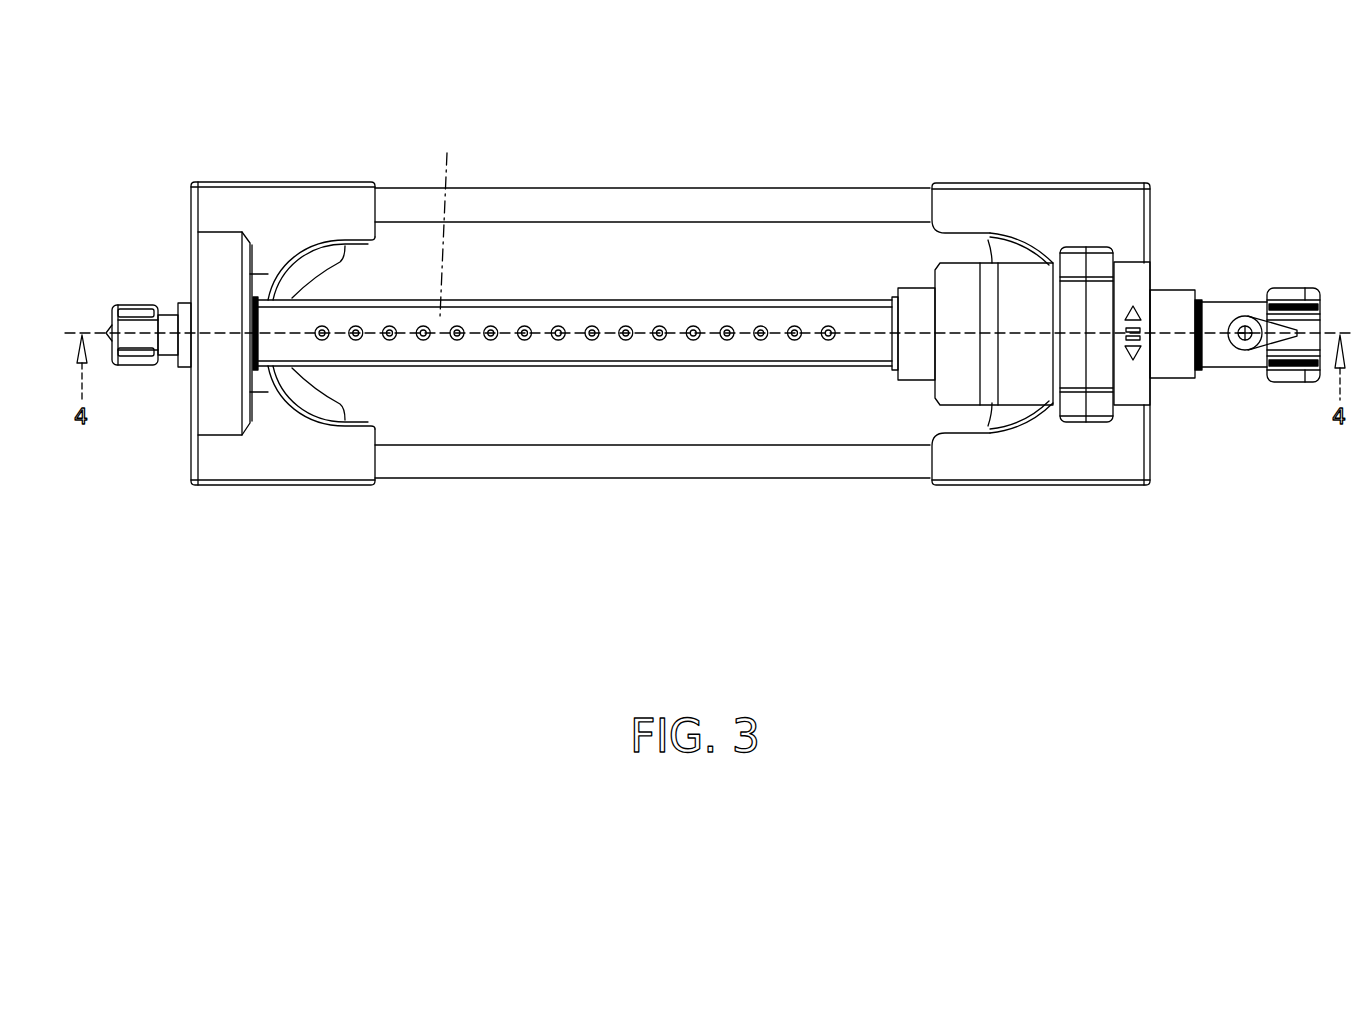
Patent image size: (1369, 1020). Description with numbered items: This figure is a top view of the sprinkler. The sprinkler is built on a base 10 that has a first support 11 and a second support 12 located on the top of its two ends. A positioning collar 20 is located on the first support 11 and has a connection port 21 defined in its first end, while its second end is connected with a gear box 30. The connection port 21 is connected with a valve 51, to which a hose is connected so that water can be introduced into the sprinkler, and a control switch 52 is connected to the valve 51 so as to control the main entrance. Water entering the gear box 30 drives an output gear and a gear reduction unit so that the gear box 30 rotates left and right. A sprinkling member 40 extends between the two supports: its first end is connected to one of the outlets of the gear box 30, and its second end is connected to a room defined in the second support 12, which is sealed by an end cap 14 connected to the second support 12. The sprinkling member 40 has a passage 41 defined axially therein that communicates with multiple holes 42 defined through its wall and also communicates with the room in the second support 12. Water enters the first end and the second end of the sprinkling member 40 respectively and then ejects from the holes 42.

The base 10 is at (513, 480).
The first support 11 is at (1052, 450).
The second support 12 is at (280, 452).
The end cap 14 is at (140, 305).
The positioning collar 20 is at (1093, 241).
The connection port 21 is at (1176, 290).
The gear box 30 is at (966, 260).
The sprinkling member 40 is at (684, 298).
The passage 41 is at (453, 205).
The holes 42 is at (525, 325).
The valve 51 is at (1244, 362).
The control switch 52 is at (1257, 325).